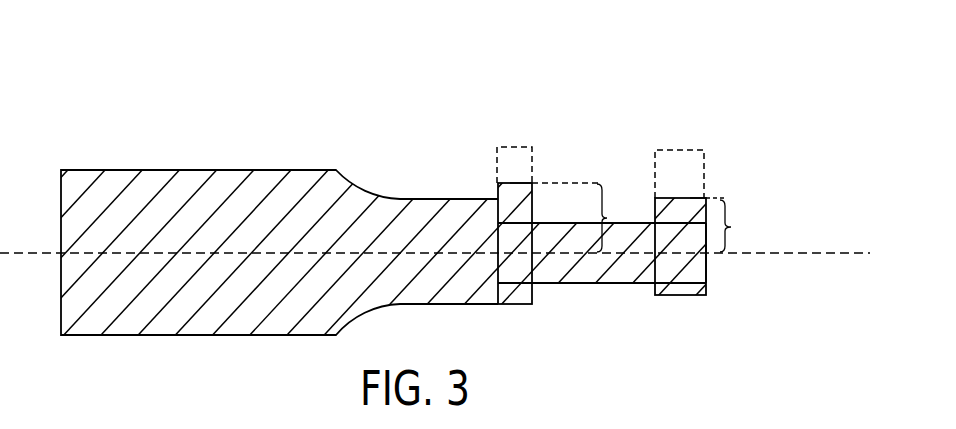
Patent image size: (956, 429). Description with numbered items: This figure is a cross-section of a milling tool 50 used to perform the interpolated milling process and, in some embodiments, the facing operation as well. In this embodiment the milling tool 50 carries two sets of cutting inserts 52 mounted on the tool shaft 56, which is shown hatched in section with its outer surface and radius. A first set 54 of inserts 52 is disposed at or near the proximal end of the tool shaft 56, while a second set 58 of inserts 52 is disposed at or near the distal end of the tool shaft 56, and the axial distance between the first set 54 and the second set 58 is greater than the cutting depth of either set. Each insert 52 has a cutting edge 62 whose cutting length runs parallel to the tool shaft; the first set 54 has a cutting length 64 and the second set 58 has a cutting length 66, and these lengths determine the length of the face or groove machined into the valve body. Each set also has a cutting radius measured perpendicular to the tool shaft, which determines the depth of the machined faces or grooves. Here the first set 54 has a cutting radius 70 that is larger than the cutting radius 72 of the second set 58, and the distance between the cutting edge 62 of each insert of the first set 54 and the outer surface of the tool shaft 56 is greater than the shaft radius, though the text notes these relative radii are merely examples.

The milling tool 50 is at (110, 183).
The cutting inserts 52 is at (620, 236).
The first set of inserts 54 is at (497, 195).
The tool shaft 56 is at (628, 283).
The second set of inserts 58 is at (707, 209).
The cutting edge 62 is at (521, 185).
The cutting length of first set 64 is at (512, 147).
The cutting length of second set 66 is at (683, 150).
The cutting radius of first set 70 is at (581, 217).
The cutting radius of second set 72 is at (731, 225).